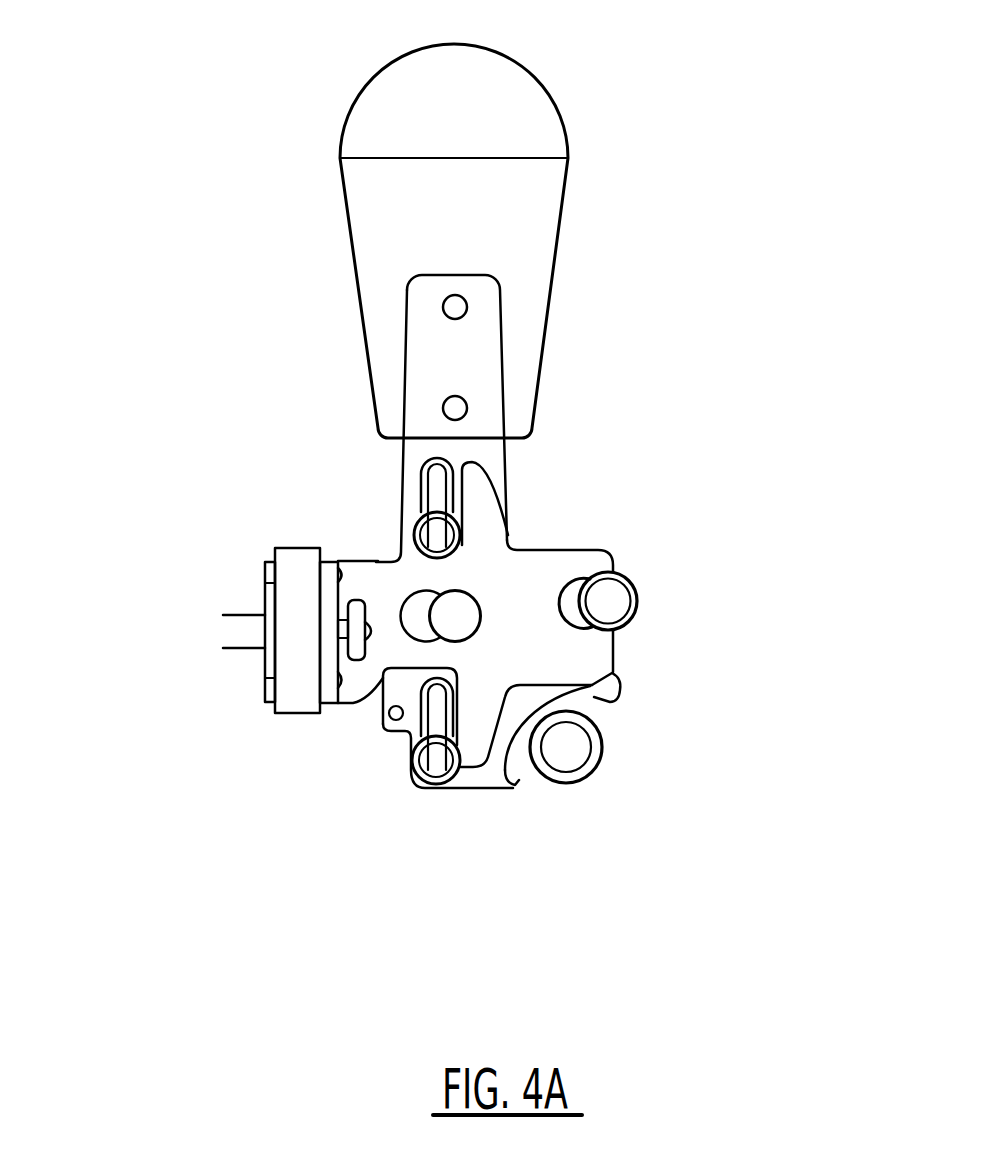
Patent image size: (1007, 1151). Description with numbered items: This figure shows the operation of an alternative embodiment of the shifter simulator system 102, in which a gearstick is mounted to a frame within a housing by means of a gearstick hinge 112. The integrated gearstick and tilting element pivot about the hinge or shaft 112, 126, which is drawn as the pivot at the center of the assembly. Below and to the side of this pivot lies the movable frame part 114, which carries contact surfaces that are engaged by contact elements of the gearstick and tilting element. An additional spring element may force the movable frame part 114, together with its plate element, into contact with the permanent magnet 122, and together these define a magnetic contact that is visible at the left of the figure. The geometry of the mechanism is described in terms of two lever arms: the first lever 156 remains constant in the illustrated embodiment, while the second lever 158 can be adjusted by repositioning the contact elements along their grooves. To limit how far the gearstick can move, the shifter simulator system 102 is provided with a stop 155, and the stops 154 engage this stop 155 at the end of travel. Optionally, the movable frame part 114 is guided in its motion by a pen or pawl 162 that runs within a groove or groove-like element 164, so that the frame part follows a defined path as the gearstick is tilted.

The shifter simulator system 102 is at (605, 131).
The second lever 158 is at (475, 510).
The gearstick hinge 112 is at (453, 620).
The hinge or shaft 126 is at (421, 616).
The groove or groove-like element 164 is at (567, 597).
The pen or pawl 162 is at (613, 608).
The movable frame part 114 is at (595, 655).
The stops 154 is at (610, 703).
The stop 155 is at (575, 753).
The first lever 156 is at (392, 650).
The permanent magnet 122 is at (298, 697).